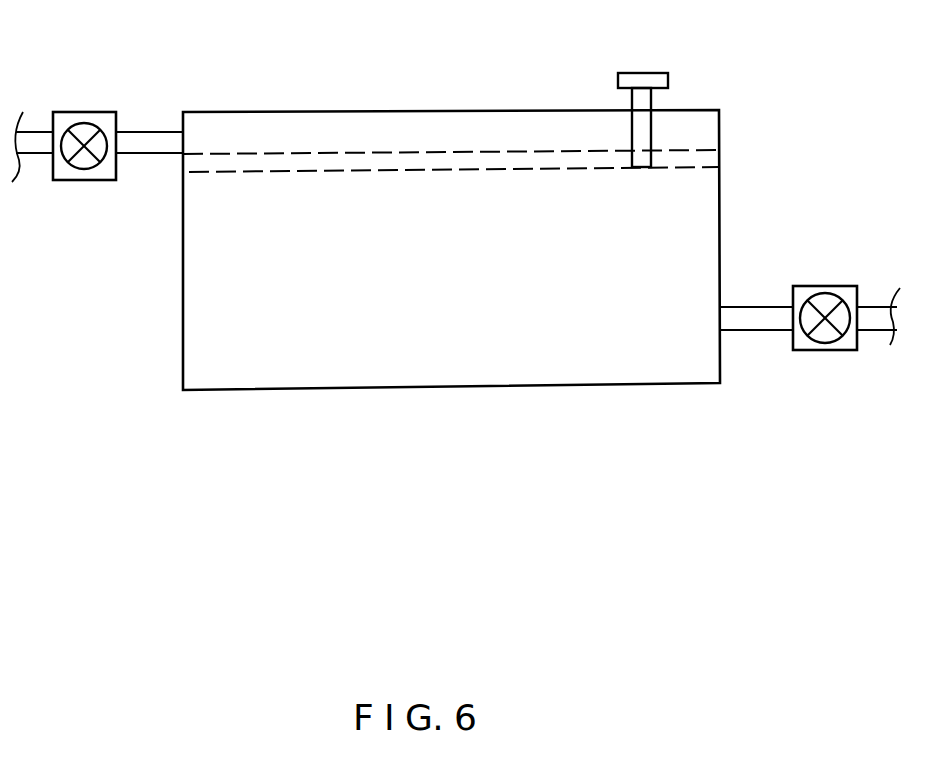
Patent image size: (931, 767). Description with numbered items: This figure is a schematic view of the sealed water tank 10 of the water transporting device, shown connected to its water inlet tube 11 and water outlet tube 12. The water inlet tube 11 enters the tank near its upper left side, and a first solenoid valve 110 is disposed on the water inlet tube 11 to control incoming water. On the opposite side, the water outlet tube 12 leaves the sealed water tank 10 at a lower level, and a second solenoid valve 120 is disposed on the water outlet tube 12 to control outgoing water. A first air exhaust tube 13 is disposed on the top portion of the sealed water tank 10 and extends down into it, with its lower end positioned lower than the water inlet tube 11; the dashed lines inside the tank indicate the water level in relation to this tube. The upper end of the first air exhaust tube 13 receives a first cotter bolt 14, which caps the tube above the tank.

The sealed water tank 10 is at (710, 260).
The water inlet tube 11 is at (157, 147).
The first solenoid valve 110 is at (95, 177).
The water outlet tube 12 is at (758, 327).
The second solenoid valve 120 is at (832, 345).
The first air exhaust tube 13 is at (647, 102).
The first cotter bolt 14 is at (650, 72).